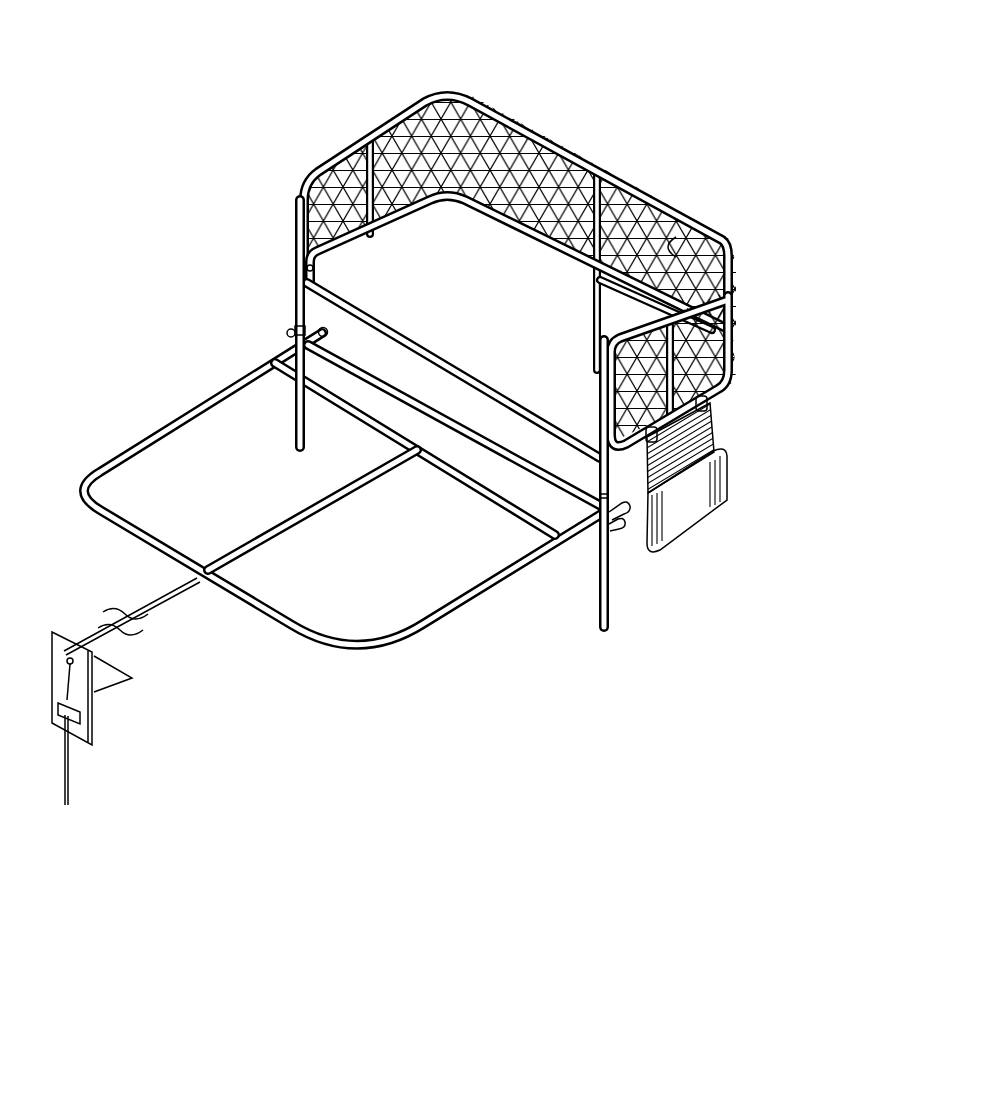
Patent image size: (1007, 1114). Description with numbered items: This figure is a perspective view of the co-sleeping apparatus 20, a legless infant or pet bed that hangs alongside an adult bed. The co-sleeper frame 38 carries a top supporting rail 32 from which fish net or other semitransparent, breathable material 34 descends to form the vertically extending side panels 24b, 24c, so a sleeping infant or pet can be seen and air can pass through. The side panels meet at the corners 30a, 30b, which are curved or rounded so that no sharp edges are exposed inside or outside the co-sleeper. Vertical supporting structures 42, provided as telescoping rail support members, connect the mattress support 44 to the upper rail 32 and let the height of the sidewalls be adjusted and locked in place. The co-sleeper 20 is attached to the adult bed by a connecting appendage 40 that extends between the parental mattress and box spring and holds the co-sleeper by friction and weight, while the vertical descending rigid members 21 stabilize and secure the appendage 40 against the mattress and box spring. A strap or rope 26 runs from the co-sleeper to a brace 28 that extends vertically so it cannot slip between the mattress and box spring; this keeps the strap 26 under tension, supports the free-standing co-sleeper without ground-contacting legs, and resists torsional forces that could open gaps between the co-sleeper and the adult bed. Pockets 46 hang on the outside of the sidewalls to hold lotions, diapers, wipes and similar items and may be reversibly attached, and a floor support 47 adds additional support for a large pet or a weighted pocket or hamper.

The co-sleeping apparatus 20 is at (683, 105).
The vertical descending rigid members 21 is at (300, 426).
The side panel 24b is at (678, 224).
The side panel 24c is at (733, 362).
The strap or rope 26 is at (155, 612).
The brace 28 is at (104, 722).
The corner 30a is at (457, 86).
The corner 30b is at (740, 262).
The top supporting rail 32 is at (548, 131).
The material 34 is at (522, 185).
The co-sleeper frame 38 is at (746, 378).
The connecting appendage 40 is at (352, 650).
The vertical supporting structures 42 is at (350, 157).
The mattress support 44 is at (718, 402).
The pockets 46 is at (706, 506).
The floor support 47 is at (585, 316).